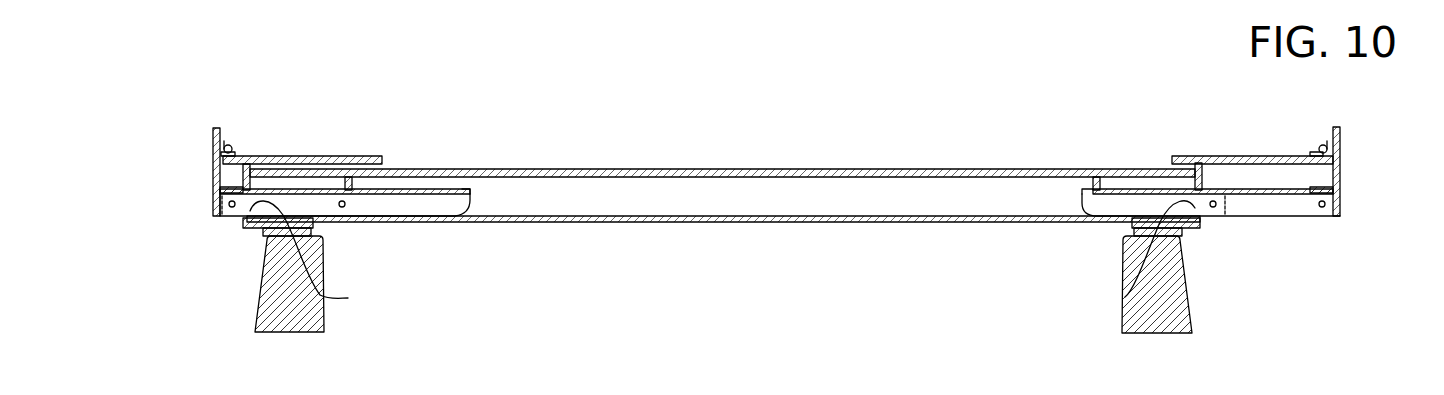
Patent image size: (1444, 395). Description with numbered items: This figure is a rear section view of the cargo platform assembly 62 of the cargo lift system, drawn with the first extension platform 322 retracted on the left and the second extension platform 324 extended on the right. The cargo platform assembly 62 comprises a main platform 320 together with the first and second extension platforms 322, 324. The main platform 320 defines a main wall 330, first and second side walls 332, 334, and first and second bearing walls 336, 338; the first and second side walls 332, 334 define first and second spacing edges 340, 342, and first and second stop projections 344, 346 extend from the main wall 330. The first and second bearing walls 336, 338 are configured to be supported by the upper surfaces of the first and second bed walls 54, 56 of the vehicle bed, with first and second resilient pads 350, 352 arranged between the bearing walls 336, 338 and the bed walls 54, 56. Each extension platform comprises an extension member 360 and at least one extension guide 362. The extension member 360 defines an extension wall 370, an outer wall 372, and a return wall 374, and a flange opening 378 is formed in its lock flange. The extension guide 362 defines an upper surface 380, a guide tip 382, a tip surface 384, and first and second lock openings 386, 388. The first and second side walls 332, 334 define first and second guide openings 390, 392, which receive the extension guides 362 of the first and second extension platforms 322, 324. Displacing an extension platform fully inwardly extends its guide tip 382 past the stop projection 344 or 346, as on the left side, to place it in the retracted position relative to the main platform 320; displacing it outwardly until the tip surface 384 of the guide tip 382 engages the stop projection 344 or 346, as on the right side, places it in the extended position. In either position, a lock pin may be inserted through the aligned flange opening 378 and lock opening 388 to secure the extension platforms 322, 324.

The first bed wall 54 is at (257, 292).
The second bed wall 56 is at (1188, 300).
The cargo platform assembly 62 is at (778, 167).
The main platform 320 is at (875, 146).
The first extension platform 322 is at (297, 121).
The second extension platform 324 is at (1210, 131).
The main wall 330 is at (578, 168).
The first side wall 332 is at (243, 182).
The second side wall 334 is at (1218, 186).
The first bearing wall 336 is at (315, 225).
The second bearing wall 338 is at (1196, 226).
The first spacing edge 340 is at (248, 158).
The second spacing edge 342 is at (1200, 178).
The first stop projection 344 is at (353, 187).
The second stop projection 346 is at (1102, 186).
The first resilient pad 350 is at (250, 211).
The second resilient pad 352 is at (1182, 234).
The extension member 360 is at (1268, 157).
The extension guide 362 is at (417, 205).
The extension wall 370 is at (1248, 157).
The outer wall 372 is at (1341, 170).
The return wall 374 is at (1314, 187).
The flange opening 378 is at (232, 208).
The upper surface 380 is at (418, 190).
The guide tip 382 is at (473, 202).
The tip surface 384 is at (447, 190).
The first lock opening 386 is at (343, 208).
The second lock opening 388 is at (1323, 208).
The first guide opening 390 is at (317, 255).
The second guide opening 392 is at (1125, 297).